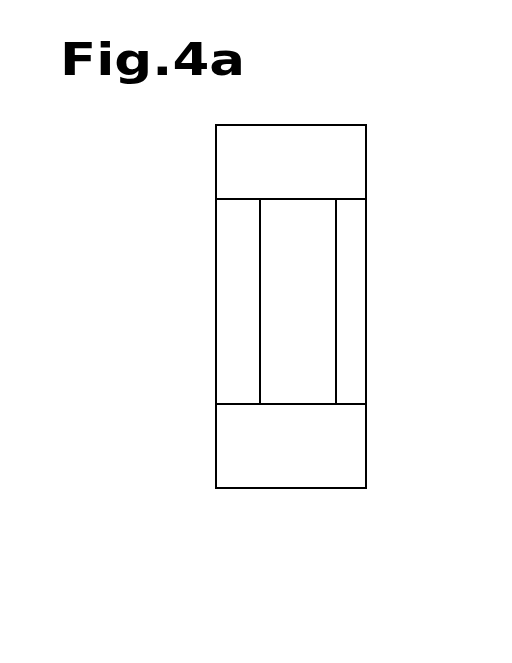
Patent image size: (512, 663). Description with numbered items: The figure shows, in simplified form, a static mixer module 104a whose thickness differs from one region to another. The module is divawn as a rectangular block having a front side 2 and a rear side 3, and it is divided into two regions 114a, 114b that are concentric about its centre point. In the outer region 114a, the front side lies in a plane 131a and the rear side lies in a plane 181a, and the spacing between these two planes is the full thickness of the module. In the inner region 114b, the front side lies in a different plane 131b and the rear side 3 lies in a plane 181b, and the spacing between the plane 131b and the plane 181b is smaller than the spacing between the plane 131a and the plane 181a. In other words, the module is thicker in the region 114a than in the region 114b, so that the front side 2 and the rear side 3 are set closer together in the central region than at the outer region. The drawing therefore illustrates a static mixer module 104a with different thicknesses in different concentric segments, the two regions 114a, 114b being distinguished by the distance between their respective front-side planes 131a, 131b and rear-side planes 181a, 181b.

The front side 2 is at (203, 377).
The rear side 3 is at (380, 375).
The static mixer module 104a is at (386, 487).
The first region 114a is at (293, 160).
The second region 114b is at (287, 336).
The plane of the front side 131a is at (213, 161).
The plane of the front side 131b is at (259, 272).
The plane of the rear side 181a is at (366, 155).
The plane of the rear side 181b is at (366, 272).